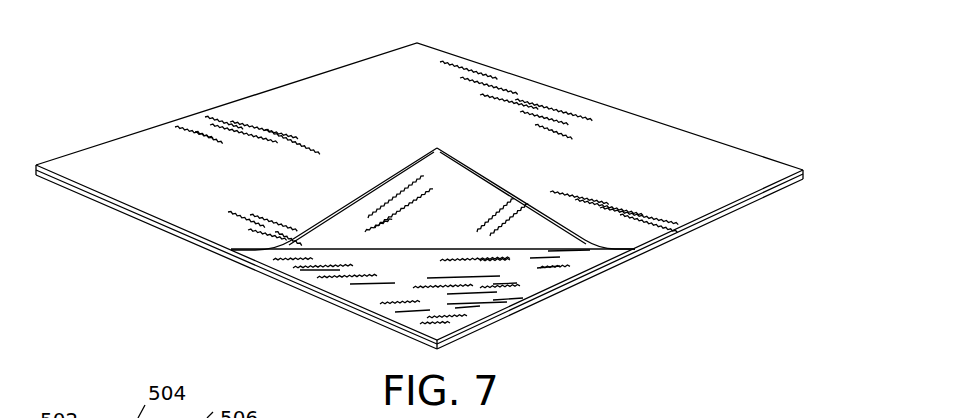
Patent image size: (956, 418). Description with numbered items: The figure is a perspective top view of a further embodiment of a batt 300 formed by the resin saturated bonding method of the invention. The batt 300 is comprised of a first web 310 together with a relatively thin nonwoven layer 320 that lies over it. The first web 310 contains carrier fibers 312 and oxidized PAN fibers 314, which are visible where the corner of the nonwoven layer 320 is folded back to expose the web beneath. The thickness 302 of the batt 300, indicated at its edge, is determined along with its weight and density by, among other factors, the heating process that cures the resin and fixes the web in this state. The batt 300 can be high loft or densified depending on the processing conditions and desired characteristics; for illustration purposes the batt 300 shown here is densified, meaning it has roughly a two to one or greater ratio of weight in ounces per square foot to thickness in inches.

The batt 300 is at (600, 50).
The thickness 302 is at (813, 166).
The first web 310 is at (593, 273).
The carrier fibers 312 is at (328, 277).
The oxidized PAN fibers 314 is at (392, 305).
The nonwoven layer 320 is at (323, 73).